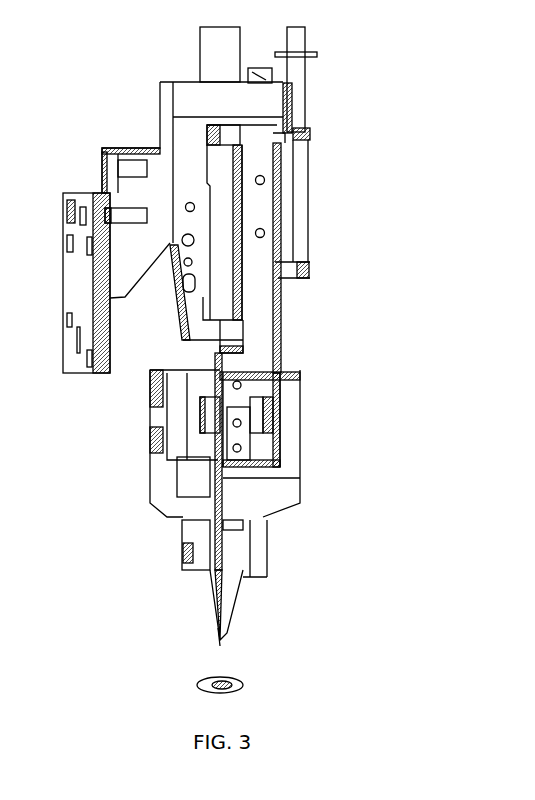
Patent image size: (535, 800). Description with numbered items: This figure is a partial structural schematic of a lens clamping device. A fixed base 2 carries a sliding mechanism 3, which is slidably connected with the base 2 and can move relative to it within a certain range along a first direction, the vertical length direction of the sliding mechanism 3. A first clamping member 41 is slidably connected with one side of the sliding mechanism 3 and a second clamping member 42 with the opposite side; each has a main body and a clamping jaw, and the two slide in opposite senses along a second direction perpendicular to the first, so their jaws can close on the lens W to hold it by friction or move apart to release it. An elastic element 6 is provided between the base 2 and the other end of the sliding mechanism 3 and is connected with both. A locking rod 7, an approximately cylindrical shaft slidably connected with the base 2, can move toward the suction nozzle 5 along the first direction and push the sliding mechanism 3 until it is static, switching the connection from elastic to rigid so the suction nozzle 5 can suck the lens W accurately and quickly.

The base 2 is at (192, 102).
The sliding mechanism 3 is at (260, 293).
The suction nozzle 5 is at (230, 647).
The elastic element 6 is at (307, 193).
The locking rod 7 is at (307, 95).
The first clamping member 41 is at (277, 487).
The second clamping member 42 is at (197, 520).
The lens W is at (200, 688).